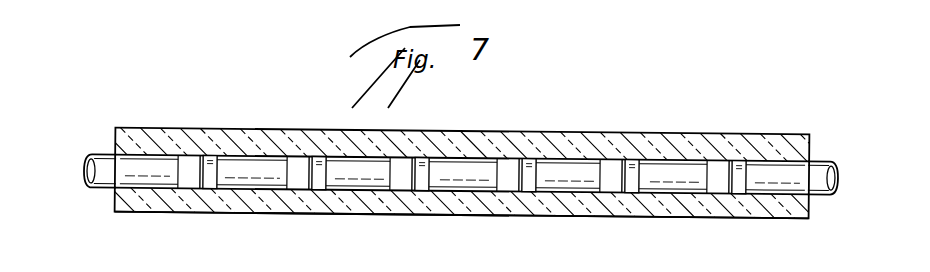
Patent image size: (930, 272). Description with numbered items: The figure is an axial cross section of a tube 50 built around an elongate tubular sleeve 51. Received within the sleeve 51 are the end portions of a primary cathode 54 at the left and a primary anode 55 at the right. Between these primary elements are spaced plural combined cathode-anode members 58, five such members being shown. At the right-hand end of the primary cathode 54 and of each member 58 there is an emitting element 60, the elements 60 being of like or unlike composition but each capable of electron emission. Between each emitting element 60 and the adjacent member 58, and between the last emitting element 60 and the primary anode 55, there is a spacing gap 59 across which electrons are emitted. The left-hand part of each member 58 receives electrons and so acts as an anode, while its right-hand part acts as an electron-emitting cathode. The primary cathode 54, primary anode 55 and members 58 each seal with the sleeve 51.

The tube 50 is at (167, 218).
The elongate tubular sleeve 51 is at (213, 216).
The primary cathode 54 is at (97, 191).
The primary anode 55 is at (780, 197).
The combined cathode-anode member 58 is at (263, 192).
The spacing gap 59 is at (222, 158).
The emitting element 60 is at (196, 158).